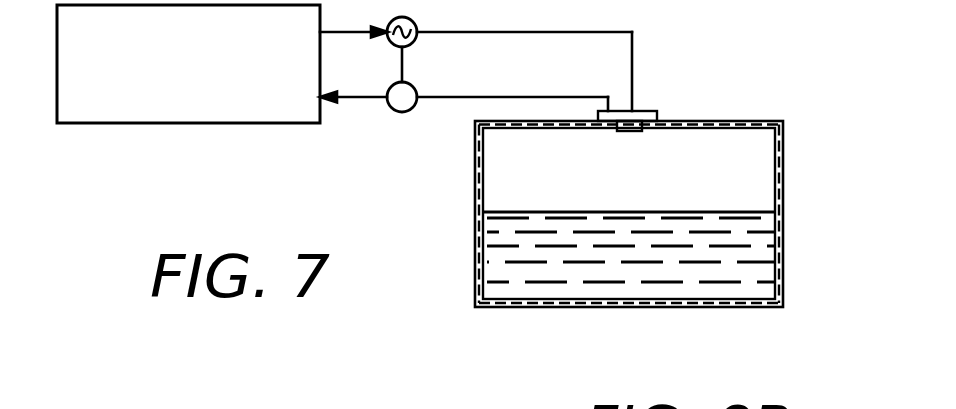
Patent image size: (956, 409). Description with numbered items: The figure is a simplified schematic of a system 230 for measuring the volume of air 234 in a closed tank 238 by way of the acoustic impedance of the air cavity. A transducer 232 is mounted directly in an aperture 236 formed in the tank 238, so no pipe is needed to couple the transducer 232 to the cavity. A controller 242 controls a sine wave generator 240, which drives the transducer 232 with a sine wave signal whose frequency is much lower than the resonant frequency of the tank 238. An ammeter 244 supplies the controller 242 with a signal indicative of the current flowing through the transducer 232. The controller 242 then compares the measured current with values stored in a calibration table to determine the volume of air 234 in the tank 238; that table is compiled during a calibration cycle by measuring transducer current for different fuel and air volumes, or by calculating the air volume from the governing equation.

The system 230 is at (807, 157).
The transducer 232 is at (658, 116).
The volume of air 234 is at (723, 181).
The aperture 236 is at (603, 137).
The tank 238 is at (475, 238).
The sine wave generator 240 is at (414, 39).
The controller 242 is at (186, 124).
The ammeter 244 is at (397, 112).